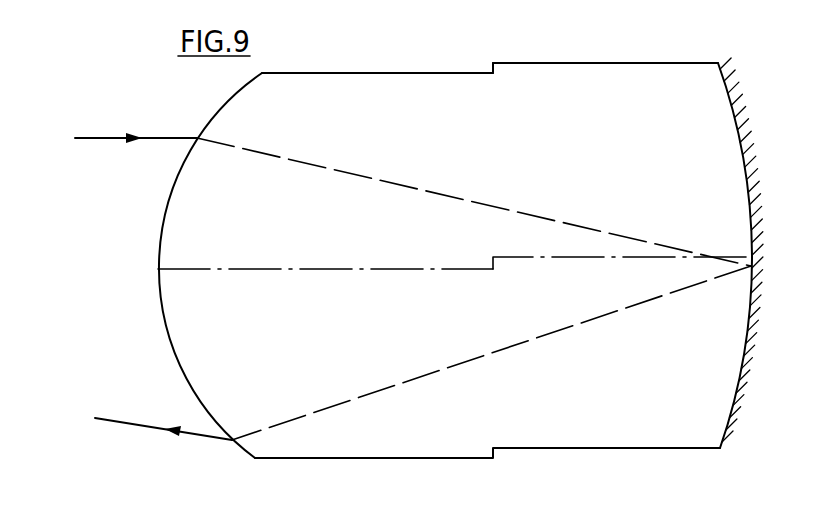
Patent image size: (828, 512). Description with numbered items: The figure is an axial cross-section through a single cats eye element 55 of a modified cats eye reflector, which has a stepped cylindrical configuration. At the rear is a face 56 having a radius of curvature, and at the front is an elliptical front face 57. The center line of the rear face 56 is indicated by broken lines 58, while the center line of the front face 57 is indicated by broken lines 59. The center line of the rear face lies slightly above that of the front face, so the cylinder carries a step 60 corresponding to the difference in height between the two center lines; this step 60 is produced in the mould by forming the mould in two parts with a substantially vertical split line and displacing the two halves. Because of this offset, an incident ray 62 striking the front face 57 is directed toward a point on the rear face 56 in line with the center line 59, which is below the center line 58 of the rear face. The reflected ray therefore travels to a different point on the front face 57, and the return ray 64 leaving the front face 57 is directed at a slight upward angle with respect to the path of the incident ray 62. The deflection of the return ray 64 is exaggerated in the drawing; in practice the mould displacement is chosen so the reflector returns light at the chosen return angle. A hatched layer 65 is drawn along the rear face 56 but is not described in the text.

The cats eye element 55 is at (609, 457).
The rear face 56 is at (742, 377).
The front face 57 is at (158, 308).
The center line of the rear face 58 is at (600, 258).
The center line of the front face 59 is at (366, 268).
The step 60 is at (493, 72).
The incident ray 62 is at (152, 137).
The return ray 64 is at (128, 420).
The reflective coating 65 is at (750, 355).